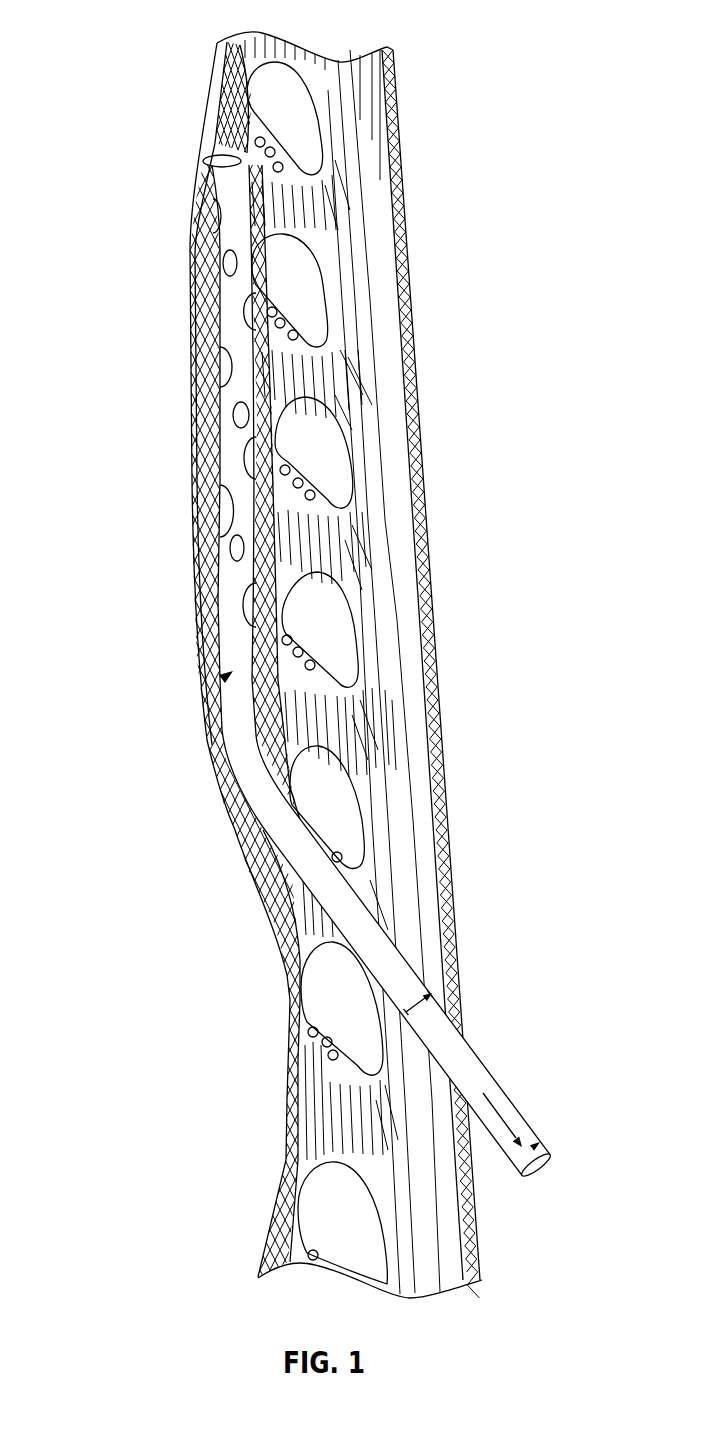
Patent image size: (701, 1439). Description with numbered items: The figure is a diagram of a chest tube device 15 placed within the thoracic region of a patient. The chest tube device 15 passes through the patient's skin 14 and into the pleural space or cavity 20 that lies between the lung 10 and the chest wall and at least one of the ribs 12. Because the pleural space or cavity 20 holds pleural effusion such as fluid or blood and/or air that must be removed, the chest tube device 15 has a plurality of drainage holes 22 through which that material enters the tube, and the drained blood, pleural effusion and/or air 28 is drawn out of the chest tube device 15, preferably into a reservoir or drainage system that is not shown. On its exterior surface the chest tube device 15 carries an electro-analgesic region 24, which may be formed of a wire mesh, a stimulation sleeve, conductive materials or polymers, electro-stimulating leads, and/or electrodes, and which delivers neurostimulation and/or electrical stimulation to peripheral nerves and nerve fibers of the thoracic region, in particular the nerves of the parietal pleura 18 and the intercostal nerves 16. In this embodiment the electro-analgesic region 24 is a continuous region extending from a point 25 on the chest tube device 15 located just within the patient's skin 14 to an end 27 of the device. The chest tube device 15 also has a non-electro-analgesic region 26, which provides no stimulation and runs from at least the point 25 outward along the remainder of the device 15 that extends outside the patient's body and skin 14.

The lung 10 is at (106, 30).
The ribs 12 is at (262, 108).
The skin 14 is at (398, 139).
The chest tube device 15 is at (226, 677).
The intercostal nerves 16 is at (275, 167).
The parietal pleura 18 is at (248, 205).
The pleural space or cavity 20 is at (197, 383).
The drainage holes 22 is at (236, 416).
The electro-analgesic region 24 is at (405, 950).
The point 25 is at (430, 1008).
The non-electro-analgesic region 26 is at (511, 1096).
The end 27 is at (221, 158).
The drained blood, pleural effusion and/or air 28 is at (552, 1158).